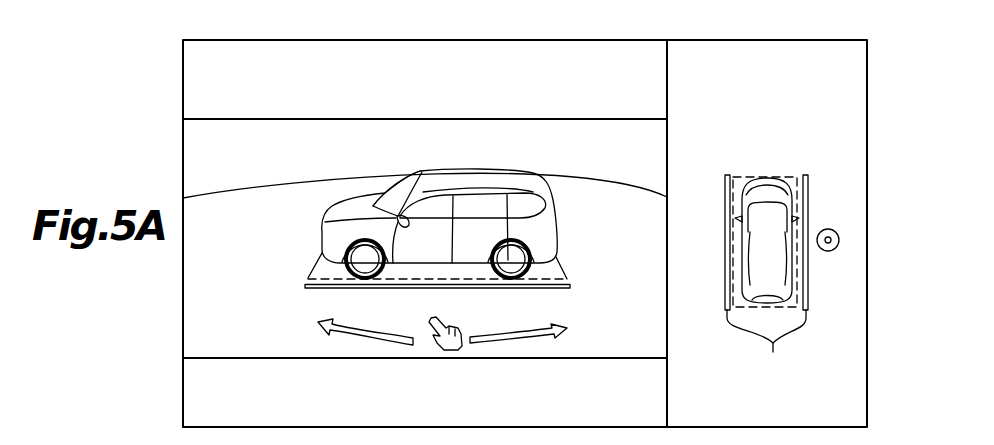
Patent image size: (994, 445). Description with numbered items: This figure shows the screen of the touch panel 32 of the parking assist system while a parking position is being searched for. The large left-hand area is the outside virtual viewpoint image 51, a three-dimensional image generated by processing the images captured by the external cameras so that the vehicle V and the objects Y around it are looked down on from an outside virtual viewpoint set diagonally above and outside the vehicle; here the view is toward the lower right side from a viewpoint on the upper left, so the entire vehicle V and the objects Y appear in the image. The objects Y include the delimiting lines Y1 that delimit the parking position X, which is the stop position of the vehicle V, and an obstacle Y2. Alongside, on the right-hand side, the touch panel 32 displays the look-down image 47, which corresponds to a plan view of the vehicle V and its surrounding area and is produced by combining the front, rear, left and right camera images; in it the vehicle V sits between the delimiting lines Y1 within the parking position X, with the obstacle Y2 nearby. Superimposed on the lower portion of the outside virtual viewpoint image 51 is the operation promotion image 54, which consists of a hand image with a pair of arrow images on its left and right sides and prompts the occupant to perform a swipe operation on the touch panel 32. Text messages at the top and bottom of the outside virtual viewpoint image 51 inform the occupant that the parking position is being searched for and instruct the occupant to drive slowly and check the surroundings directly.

The touch panel 32 is at (834, 408).
The outside virtual viewpoint image 51 is at (484, 228).
The look-down image 47 is at (855, 68).
The operation promotion image 54 is at (581, 326).
The vehicle V is at (526, 160).
The parking position X is at (322, 255).
The objects Y is at (316, 300).
The delimiting lines Y1 is at (573, 285).
The obstacle Y2 is at (828, 253).